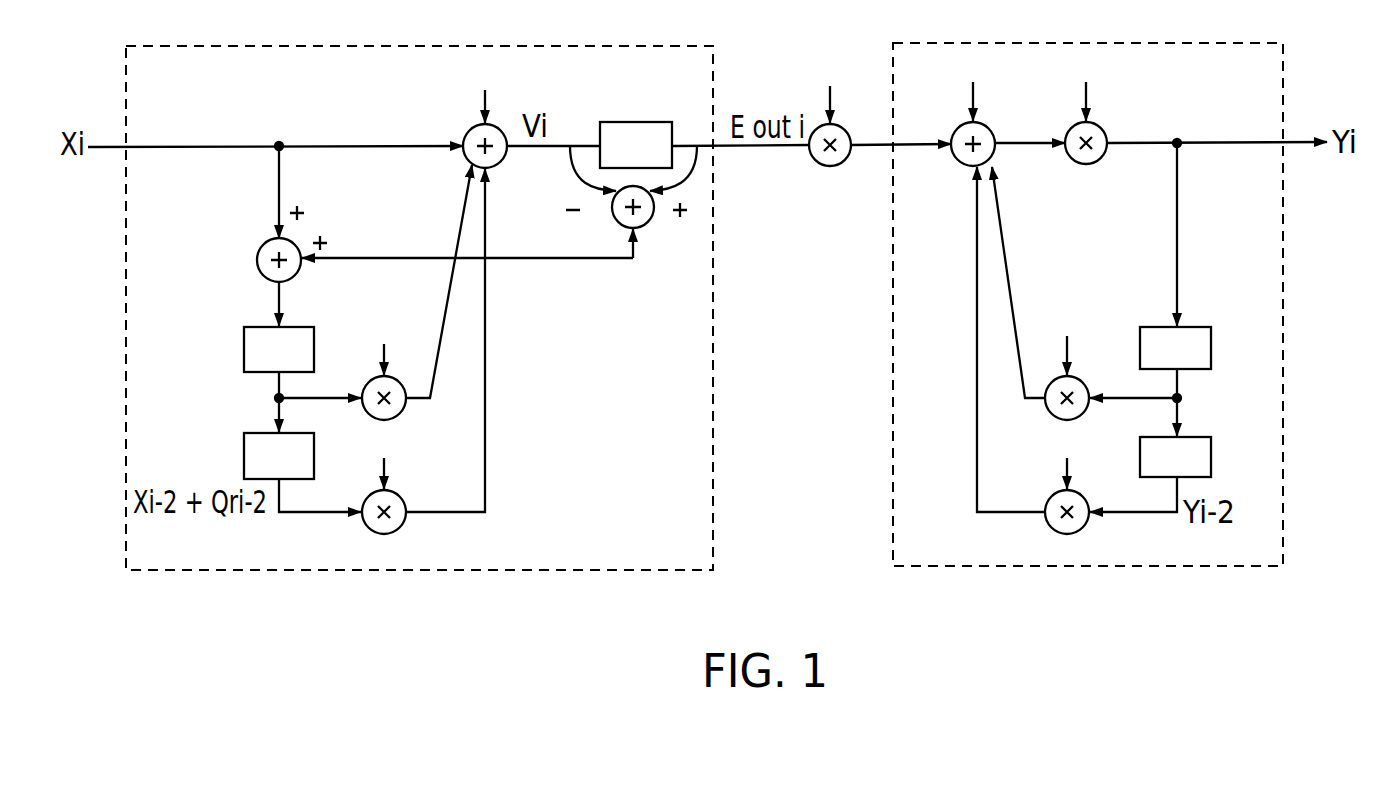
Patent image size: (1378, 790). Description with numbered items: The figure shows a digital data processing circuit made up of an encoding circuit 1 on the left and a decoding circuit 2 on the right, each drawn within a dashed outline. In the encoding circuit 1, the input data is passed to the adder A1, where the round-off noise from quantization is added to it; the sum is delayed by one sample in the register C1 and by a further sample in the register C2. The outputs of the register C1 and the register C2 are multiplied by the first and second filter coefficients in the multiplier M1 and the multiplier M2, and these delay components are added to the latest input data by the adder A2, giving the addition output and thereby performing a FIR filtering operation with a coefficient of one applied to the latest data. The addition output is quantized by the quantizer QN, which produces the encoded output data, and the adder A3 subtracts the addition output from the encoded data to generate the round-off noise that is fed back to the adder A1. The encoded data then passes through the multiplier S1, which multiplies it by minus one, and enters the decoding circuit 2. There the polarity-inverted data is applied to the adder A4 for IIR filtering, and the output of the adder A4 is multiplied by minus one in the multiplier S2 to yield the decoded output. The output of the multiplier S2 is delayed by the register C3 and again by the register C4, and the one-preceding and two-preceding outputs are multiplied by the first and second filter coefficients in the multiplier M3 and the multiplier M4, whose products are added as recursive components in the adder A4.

The encoding circuit 1 is at (360, 572).
The decoding circuit 2 is at (1075, 568).
The adder A1 is at (258, 252).
The adder A2 is at (466, 137).
The adder A3 is at (648, 227).
The adder A4 is at (962, 163).
The multiplier S1 is at (822, 165).
The multiplier S2 is at (1095, 164).
The multiplier M1 is at (400, 414).
The multiplier M2 is at (400, 529).
The multiplier M3 is at (1050, 416).
The multiplier M4 is at (1080, 531).
The register C1 is at (314, 350).
The register C2 is at (314, 462).
The register C3 is at (1211, 347).
The register C4 is at (1211, 455).
The quantizer QN is at (630, 122).